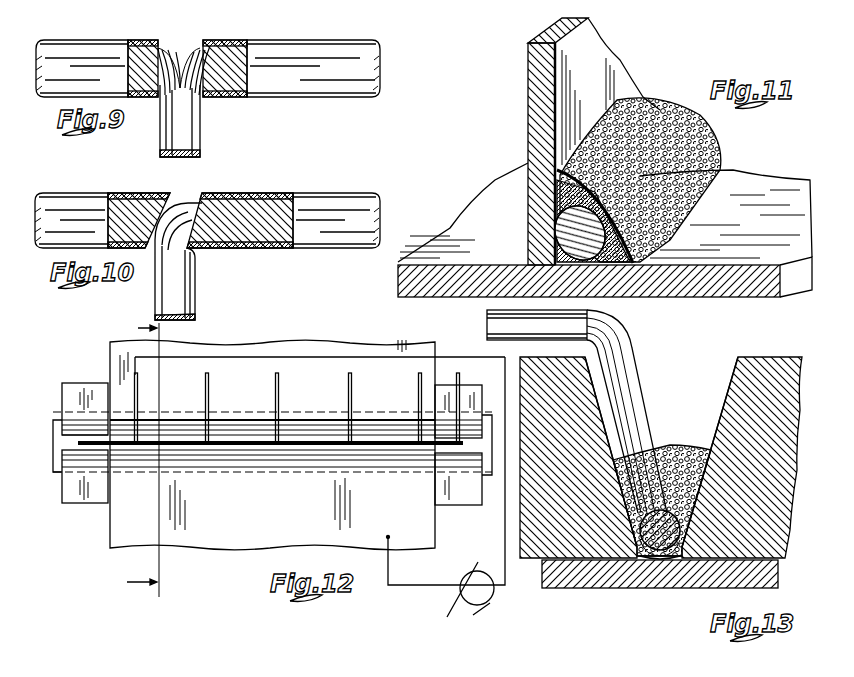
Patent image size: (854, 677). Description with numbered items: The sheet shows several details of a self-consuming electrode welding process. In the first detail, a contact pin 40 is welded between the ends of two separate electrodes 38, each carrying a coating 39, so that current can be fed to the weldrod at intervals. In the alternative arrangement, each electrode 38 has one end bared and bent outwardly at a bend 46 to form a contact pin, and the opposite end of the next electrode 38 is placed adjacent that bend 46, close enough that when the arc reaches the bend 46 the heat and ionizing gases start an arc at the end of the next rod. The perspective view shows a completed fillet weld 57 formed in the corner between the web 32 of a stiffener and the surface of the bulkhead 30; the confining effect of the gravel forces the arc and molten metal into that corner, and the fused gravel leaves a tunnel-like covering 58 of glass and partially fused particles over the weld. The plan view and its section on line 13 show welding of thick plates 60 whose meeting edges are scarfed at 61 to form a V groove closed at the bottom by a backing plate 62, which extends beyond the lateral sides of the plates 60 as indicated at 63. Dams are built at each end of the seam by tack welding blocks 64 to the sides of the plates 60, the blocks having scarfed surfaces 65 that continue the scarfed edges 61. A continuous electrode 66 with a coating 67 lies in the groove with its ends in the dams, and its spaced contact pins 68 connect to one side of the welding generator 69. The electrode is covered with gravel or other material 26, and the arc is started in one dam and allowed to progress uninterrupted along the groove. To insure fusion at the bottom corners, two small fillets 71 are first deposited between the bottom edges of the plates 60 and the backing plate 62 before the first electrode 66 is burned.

In FIG. 12, the section line 13— 13 is at (133, 464).
In FIG. 13, the gravel or other material 26 is at (673, 447).
In FIG. 11, the bulkhead 30 is at (743, 287).
In FIG. 11, the web 32 is at (532, 105).
In FIG. 9, the electrode 38 is at (153, 63).
In FIG. 10, the electrode 38 is at (153, 197).
In FIG. 9, the coating 39 is at (73, 50).
In FIG. 10, the coating 39 is at (120, 197).
In FIG. 9, the contact pin 40 is at (182, 125).
In FIG. 10, the bend 46 is at (196, 189).
In FIG. 11, the fillet weld 57 is at (548, 248).
In FIG. 11, the tunnel-like covering 58 is at (630, 262).
In FIG. 12, the plates 60 is at (325, 342).
In FIG. 13, the plates 60 is at (661, 457).
In FIG. 13, the scarfed edges 61 is at (590, 375).
In FIG. 13, the backing plate 62 is at (583, 583).
In FIG. 12, the extension of backing plate 63 is at (58, 445).
In FIG. 12, the blocks 64 is at (80, 398).
In FIG. 12, the scarfed surfaces 65 is at (65, 428).
In FIG. 13, the continuous electrode 66 is at (637, 528).
In FIG. 13, the coating 67 is at (693, 527).
In FIG. 12, the contact pins 68 is at (205, 385).
In FIG. 13, the contact pins 68 is at (625, 403).
In FIG. 12, the welding generator 69 is at (446, 495).
In FIG. 13, the small fillets 71 is at (660, 560).